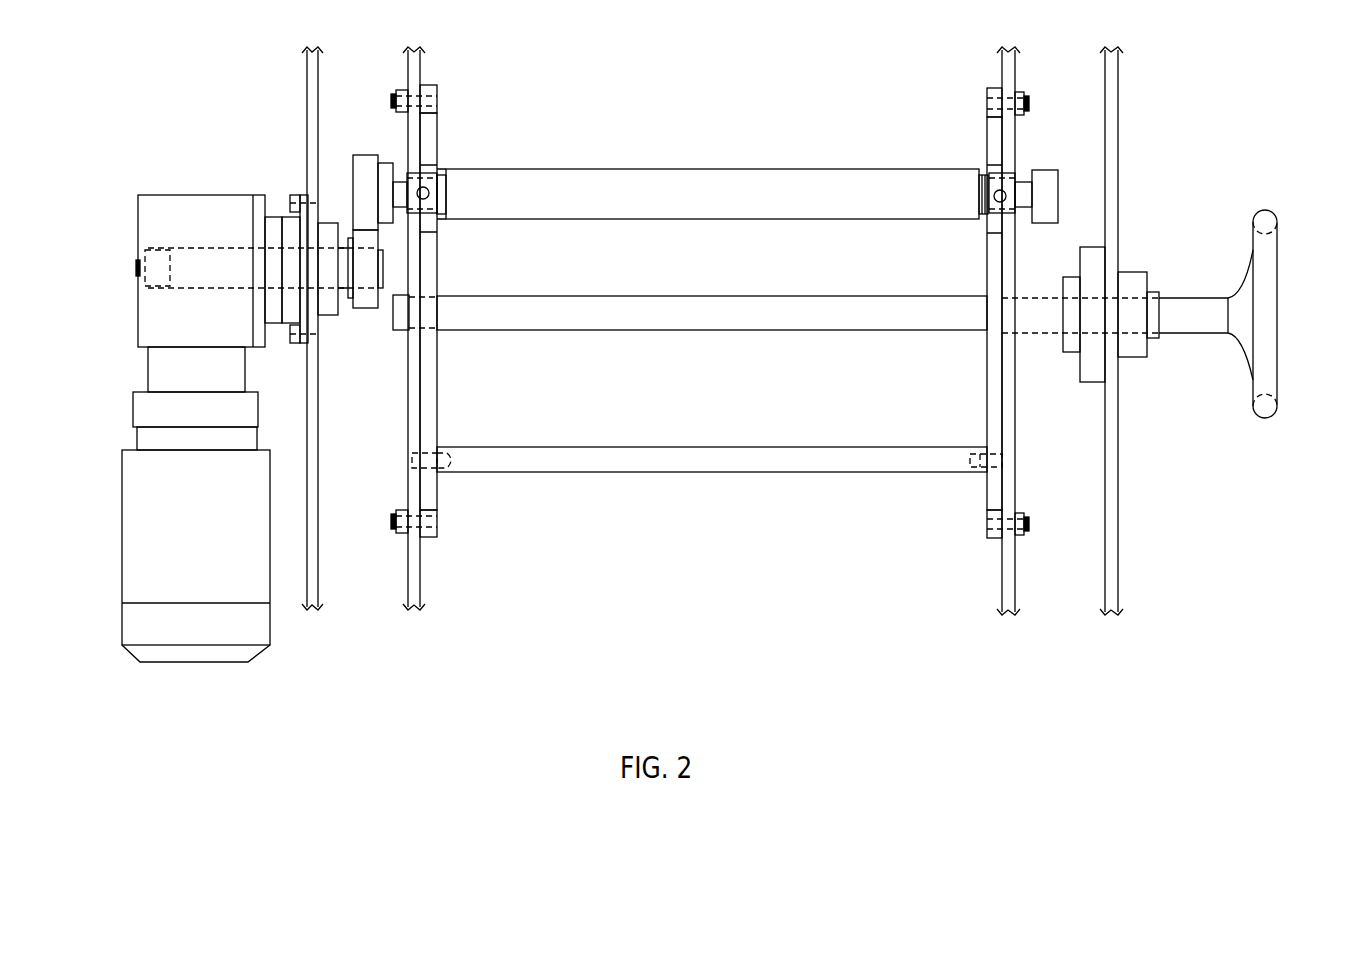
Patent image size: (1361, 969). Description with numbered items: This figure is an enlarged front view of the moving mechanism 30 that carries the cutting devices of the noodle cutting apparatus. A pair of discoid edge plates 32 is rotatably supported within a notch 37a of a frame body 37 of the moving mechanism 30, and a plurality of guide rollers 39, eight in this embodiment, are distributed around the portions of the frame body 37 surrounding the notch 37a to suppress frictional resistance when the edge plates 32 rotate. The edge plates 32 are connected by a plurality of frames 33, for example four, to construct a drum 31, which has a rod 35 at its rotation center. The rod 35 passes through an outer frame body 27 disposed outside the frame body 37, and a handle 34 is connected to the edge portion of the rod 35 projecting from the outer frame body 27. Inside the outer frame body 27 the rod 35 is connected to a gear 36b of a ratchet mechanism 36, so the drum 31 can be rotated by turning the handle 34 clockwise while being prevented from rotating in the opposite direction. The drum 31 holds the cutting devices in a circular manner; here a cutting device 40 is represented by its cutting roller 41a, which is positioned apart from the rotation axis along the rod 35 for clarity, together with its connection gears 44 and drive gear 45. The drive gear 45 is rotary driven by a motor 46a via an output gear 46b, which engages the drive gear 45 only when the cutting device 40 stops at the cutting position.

The outer frame body 27 is at (319, 452).
The moving mechanism 30 is at (1285, 263).
The drum 31 is at (887, 480).
The edge plate 32 is at (408, 408).
The frame 33 is at (711, 445).
The handle 34 is at (1268, 417).
The rod 35 is at (711, 294).
The ratchet mechanism 36 is at (1090, 246).
The gear 36b is at (1092, 367).
The frame body 37 is at (407, 70).
The notch 37a is at (418, 114).
The guide roller 39 is at (428, 86).
The cutting device 40 is at (737, 159).
The cutting roller 41a is at (657, 196).
The connection gear 44 is at (1043, 170).
The drive gear 45 is at (362, 155).
The motor 46a is at (121, 527).
The output gear 46b is at (368, 310).